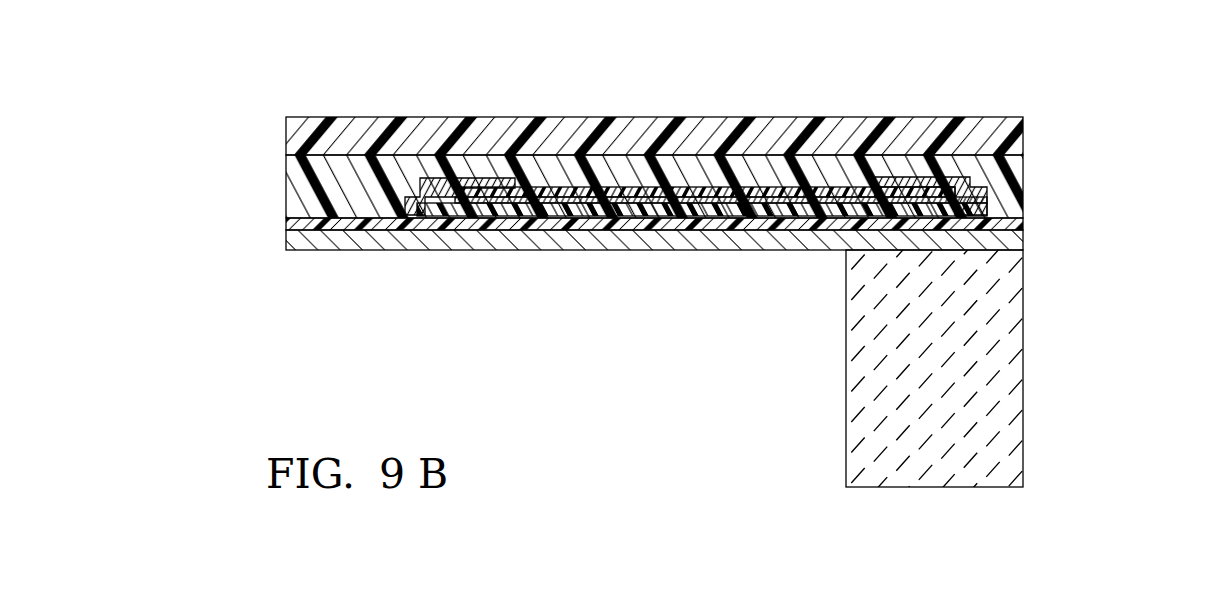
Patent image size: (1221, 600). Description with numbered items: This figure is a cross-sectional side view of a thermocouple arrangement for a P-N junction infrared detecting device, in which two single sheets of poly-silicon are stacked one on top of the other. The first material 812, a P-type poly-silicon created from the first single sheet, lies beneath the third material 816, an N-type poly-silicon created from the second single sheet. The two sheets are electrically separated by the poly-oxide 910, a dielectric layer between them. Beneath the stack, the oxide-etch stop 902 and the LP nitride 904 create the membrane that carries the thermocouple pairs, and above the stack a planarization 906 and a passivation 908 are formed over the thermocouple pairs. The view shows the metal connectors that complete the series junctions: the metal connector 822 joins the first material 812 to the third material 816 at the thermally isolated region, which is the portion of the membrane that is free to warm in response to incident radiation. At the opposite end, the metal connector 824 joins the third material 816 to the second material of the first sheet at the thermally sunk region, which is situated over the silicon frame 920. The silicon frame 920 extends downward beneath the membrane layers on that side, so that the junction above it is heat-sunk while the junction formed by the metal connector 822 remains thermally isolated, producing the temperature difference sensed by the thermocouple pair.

The oxide-etch stop 902 is at (296, 246).
The LP nitride 904 is at (288, 221).
The planarization 906 is at (1015, 206).
The passivation 908 is at (1015, 142).
The poly-oxide 910 is at (735, 222).
The first material 812 is at (461, 226).
The third material 816 is at (575, 188).
The metal connector 822 is at (434, 180).
The metal connector 824 is at (912, 178).
The silicon frame 920 is at (853, 366).